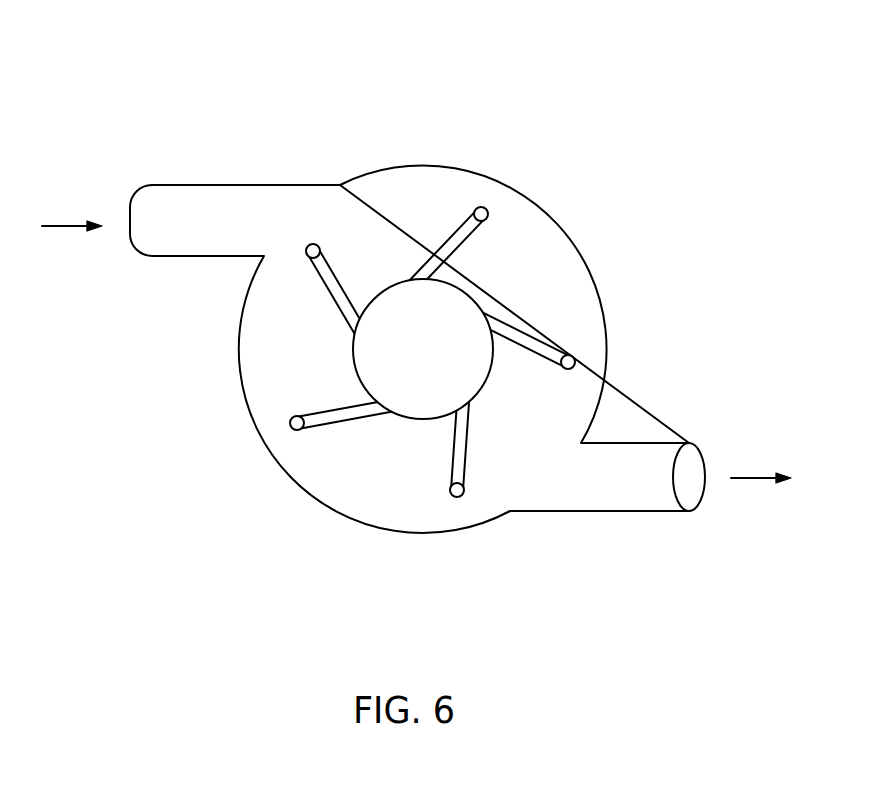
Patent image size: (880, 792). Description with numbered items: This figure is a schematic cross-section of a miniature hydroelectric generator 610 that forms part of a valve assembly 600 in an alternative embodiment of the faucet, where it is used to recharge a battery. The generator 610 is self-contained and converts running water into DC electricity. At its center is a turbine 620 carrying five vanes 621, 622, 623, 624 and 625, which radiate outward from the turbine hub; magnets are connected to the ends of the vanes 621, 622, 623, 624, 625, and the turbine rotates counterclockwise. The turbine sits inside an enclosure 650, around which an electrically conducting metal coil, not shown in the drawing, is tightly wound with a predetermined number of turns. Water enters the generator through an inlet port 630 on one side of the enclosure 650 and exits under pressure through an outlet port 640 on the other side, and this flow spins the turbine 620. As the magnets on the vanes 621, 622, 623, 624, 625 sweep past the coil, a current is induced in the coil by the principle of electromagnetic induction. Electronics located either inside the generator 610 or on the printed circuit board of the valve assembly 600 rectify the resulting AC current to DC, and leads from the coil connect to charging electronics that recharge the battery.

The valve assembly 600 is at (416, 277).
The hydroelectric generator 610 is at (417, 320).
The enclosure 650 is at (552, 218).
The turbine 620 is at (423, 349).
The vane 621 is at (340, 283).
The vane 622 is at (444, 240).
The vane 623 is at (526, 338).
The vane 624 is at (433, 438).
The vane 625 is at (340, 406).
The port 630 is at (72, 214).
The port 640 is at (761, 465).